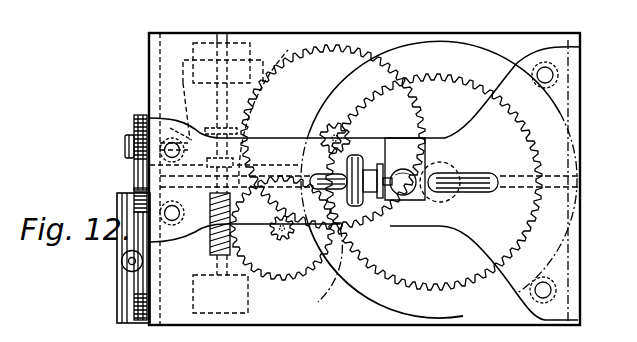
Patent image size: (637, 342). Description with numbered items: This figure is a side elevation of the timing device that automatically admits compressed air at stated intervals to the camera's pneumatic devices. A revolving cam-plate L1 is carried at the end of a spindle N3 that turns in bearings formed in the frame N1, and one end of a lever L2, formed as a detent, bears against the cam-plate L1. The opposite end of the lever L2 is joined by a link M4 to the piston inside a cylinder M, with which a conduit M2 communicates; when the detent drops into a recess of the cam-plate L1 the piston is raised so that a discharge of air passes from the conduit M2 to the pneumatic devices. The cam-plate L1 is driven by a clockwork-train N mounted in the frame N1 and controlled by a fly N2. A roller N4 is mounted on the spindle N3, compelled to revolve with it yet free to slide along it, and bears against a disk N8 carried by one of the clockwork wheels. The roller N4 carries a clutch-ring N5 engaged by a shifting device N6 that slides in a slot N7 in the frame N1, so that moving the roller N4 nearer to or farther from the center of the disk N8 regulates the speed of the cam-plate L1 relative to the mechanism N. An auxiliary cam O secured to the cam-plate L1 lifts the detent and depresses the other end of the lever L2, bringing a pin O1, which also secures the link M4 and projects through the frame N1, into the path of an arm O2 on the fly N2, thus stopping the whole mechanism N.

The clockwork-train N is at (365, 290).
The frame N1 is at (184, 242).
The fly N2 is at (190, 92).
The spindle N3 is at (347, 137).
The roller N4 is at (363, 153).
The clutch-ring N5 is at (385, 208).
The shifting device N6 is at (412, 168).
The slot N7 is at (478, 172).
The disk N8 is at (580, 47).
The auxiliary cam O is at (125, 142).
The pin O1 is at (165, 142).
The arm O2 is at (333, 137).
The cam-plate L1 is at (133, 192).
The lever L2 is at (134, 128).
The cylinder M is at (121, 266).
The conduit M2 is at (137, 270).
The link M4 is at (138, 187).